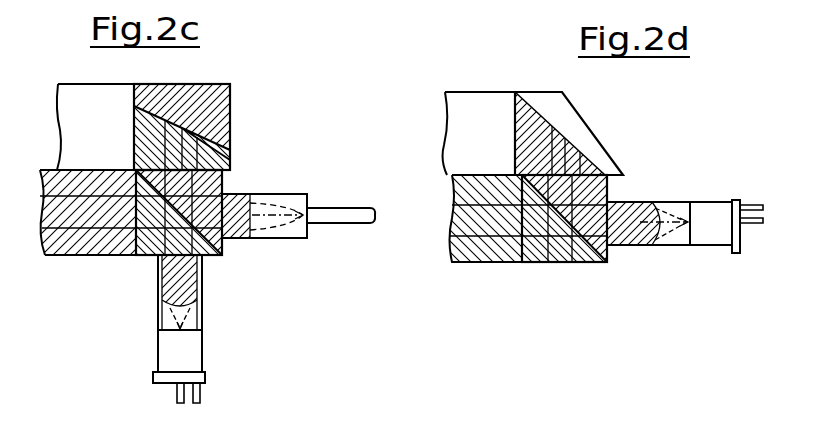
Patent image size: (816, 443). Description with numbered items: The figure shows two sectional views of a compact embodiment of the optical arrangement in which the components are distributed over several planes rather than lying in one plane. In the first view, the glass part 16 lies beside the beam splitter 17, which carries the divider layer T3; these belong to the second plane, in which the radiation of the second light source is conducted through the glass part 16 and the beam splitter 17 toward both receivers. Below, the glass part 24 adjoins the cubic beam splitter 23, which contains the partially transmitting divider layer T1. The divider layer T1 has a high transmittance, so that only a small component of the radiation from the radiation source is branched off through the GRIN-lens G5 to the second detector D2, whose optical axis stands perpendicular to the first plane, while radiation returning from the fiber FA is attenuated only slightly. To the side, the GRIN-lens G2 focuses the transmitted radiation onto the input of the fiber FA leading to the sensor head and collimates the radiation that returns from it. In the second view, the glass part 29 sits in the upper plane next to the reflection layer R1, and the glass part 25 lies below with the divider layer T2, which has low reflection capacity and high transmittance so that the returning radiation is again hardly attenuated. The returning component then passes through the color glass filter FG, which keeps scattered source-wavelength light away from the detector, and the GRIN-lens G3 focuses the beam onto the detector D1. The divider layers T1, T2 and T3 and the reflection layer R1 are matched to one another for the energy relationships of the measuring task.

In FIG. 2c, the glass part 16 is at (75, 130).
In FIG. 2c, the divider layer T3 is at (213, 147).
In FIG. 2c, the beam splitter 17 is at (232, 156).
In FIG. 2c, the GRIN-lens G2 is at (273, 194).
In FIG. 2c, the fiber FA is at (343, 208).
In FIG. 2c, the glass part 24 is at (72, 245).
In FIG. 2c, the GRIN-lens G5 is at (160, 292).
In FIG. 2c, the divider layer T1 is at (207, 250).
In FIG. 2c, the cubic beam splitter 23 is at (230, 246).
In FIG. 2c, the second detector D2 is at (190, 350).
In FIG. 2d, the glass part 29 is at (493, 112).
In FIG. 2d, the reflection layer R1 is at (577, 127).
In FIG. 2d, the color glass filter FG is at (485, 248).
In FIG. 2d, the glass part 25 is at (547, 252).
In FIG. 2d, the divider layer T2 is at (585, 262).
In FIG. 2d, the GRIN-lens G3 is at (653, 247).
In FIG. 2d, the detector D1 is at (713, 233).